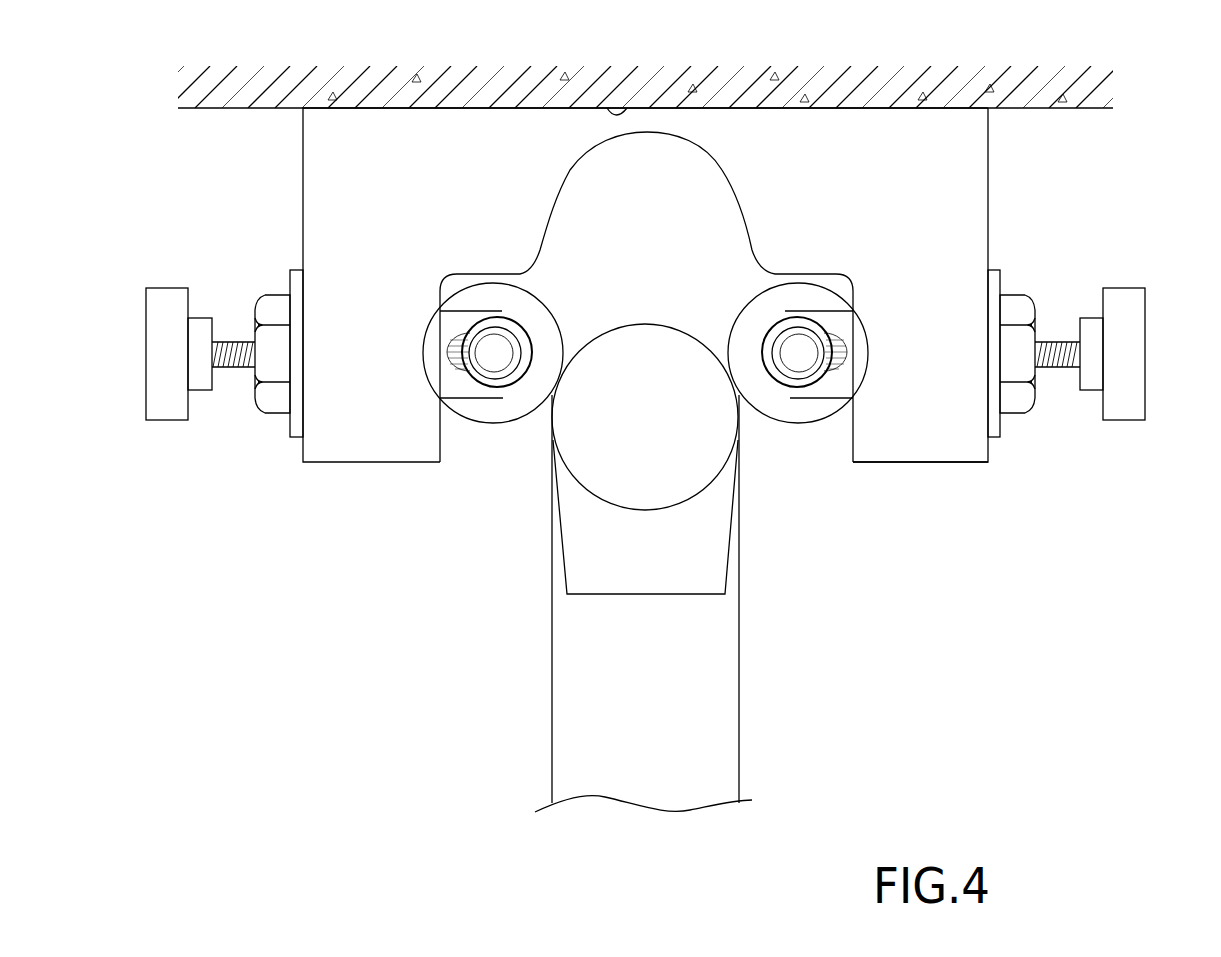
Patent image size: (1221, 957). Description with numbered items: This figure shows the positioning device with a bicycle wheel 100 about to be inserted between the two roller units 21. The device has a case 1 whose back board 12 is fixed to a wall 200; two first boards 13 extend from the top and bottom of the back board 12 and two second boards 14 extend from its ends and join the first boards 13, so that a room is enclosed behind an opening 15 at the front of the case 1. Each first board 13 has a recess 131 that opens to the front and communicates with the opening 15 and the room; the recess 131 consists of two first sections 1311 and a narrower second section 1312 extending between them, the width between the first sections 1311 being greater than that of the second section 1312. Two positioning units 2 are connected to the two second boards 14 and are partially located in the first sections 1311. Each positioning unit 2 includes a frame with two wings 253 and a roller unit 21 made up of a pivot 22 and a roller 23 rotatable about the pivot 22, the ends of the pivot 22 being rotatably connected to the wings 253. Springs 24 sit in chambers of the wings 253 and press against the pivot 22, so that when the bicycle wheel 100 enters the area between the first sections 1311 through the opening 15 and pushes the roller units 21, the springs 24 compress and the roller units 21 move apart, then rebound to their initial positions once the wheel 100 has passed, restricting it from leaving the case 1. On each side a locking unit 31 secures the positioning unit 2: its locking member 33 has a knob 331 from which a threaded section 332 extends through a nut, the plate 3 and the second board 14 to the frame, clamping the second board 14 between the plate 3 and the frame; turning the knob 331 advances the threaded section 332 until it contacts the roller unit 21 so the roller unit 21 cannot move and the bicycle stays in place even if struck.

The case 1 is at (688, 294).
The back board 12 is at (510, 108).
The first board 13 is at (852, 122).
The second board 14 is at (990, 228).
The opening 15 is at (920, 462).
The recess 131 is at (583, 297).
The first section 1311 is at (439, 337).
The second section 1312 is at (560, 181).
The wall 200 is at (610, 108).
The positioning unit 2 is at (669, 411).
The roller unit 21 is at (491, 429).
The pivot 22 is at (494, 364).
The roller 23 is at (513, 423).
The spring 24 is at (850, 372).
The wing 253 is at (790, 398).
The plate 3 is at (1096, 408).
The locking unit 31 is at (1110, 243).
The locking member 33 is at (1096, 405).
The knob 331 is at (1136, 385).
The threaded section 332 is at (1050, 366).
The bicycle wheel 100 is at (740, 690).